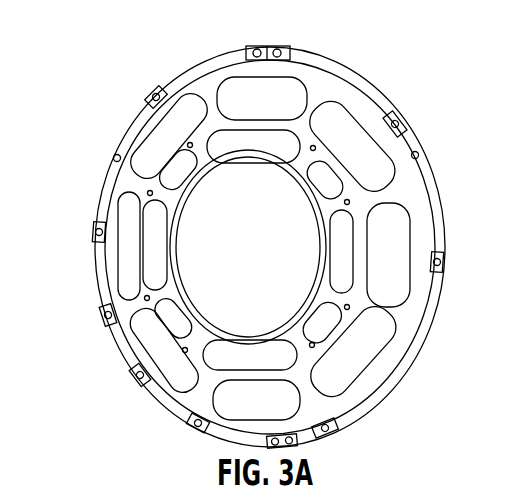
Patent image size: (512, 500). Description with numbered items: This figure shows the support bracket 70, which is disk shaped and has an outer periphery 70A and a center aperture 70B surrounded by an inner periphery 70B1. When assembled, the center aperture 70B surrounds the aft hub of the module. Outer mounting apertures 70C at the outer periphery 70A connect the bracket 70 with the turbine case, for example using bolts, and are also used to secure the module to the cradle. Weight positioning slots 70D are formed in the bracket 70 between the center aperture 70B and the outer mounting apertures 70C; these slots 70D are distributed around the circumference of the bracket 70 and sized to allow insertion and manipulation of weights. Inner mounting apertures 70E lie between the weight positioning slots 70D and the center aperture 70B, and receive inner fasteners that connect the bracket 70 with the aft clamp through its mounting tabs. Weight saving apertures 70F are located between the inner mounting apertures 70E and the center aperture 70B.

The bracket 70 is at (424, 114).
The outer periphery 70A is at (372, 89).
The center aperture 70B is at (192, 310).
The inner periphery 70B1 is at (181, 259).
The outer mounting apertures 70C is at (421, 155).
The weight positioning slots 70D is at (166, 135).
The inner mounting apertures 70E is at (302, 333).
The weight saving apertures 70F is at (152, 248).